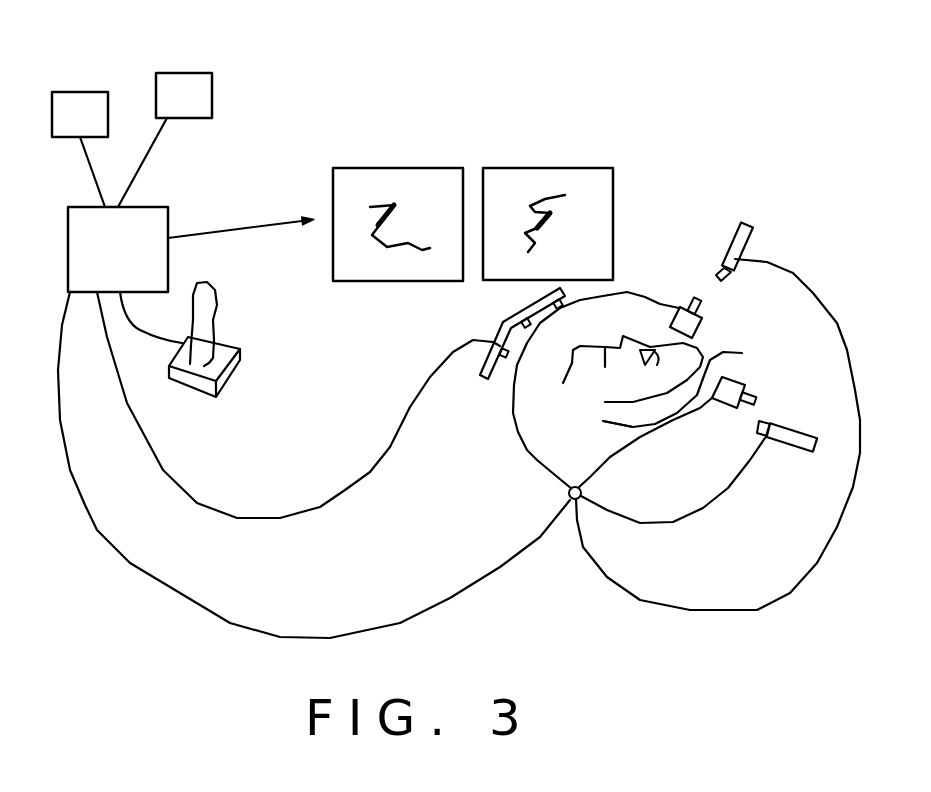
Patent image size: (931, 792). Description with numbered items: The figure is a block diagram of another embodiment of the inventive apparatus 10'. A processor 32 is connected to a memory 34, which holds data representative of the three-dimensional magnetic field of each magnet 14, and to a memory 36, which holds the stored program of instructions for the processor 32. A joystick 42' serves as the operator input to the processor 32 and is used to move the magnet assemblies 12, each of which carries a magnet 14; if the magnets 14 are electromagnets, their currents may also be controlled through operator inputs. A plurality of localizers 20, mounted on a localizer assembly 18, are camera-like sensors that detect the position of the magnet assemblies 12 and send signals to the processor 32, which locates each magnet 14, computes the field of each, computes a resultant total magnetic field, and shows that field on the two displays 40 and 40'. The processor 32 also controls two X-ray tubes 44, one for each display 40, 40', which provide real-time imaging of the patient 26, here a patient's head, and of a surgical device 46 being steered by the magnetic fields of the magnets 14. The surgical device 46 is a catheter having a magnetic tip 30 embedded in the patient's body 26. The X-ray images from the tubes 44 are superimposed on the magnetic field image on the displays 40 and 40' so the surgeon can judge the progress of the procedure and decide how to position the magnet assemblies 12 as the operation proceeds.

The apparatus 10' is at (266, 165).
The magnet assembly 12 is at (712, 326).
The magnet 14 is at (681, 306).
The localizer assembly 18 is at (478, 376).
The localizers 20 is at (560, 308).
The patient's body 26 is at (595, 393).
The magnetic tip 30 is at (690, 384).
The processor 32 is at (148, 207).
The memory 34 is at (68, 92).
The memory 36 is at (176, 73).
The display 40 is at (398, 199).
The display 40' is at (548, 199).
The joystick 42' is at (208, 342).
The X-ray tubes 44 is at (748, 240).
The surgical device 46 is at (628, 425).